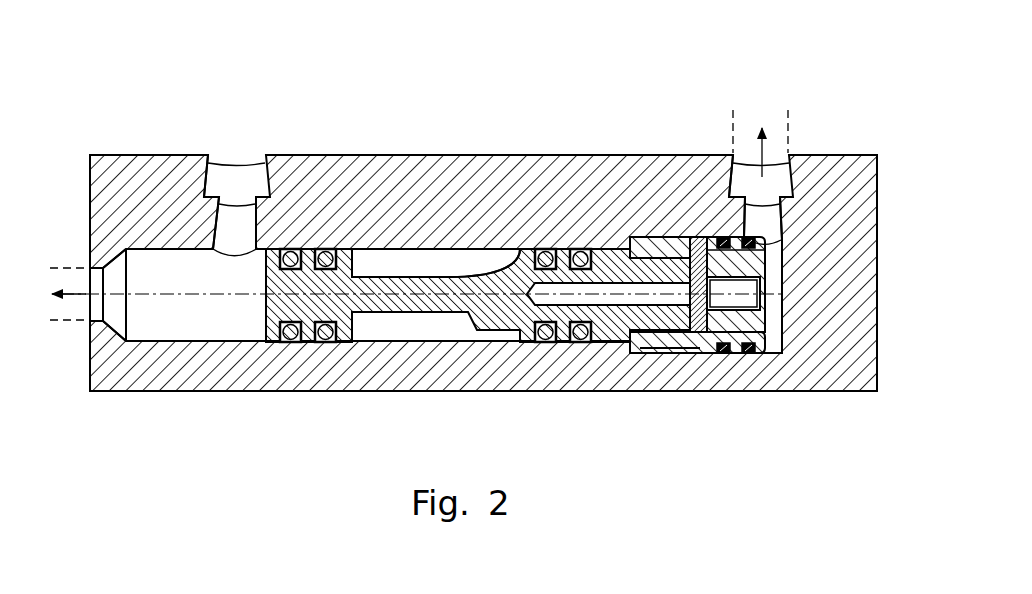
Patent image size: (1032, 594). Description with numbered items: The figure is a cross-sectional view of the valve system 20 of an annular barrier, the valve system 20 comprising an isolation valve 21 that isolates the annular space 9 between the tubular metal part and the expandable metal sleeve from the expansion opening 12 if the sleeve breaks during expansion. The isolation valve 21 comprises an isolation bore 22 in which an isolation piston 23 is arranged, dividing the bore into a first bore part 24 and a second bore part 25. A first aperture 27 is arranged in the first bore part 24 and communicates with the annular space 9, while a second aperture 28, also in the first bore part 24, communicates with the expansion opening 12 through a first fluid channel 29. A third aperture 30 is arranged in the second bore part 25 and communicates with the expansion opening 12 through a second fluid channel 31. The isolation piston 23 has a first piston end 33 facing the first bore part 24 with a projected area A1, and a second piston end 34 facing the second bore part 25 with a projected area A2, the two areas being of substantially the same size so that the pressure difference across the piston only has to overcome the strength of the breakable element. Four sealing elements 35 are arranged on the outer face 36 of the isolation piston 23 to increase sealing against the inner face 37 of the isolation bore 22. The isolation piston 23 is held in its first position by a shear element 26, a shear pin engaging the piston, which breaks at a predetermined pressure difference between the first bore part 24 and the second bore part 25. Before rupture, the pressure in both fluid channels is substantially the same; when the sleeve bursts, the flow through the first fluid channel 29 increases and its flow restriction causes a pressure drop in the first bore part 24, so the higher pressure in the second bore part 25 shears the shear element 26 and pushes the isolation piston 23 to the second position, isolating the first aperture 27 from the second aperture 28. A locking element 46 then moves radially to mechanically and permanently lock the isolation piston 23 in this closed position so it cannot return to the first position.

The valve system 20 is at (489, 203).
The isolation valve 21 is at (113, 86).
The annular space 9 is at (237, 177).
The expansion opening 12 is at (401, 206).
The first aperture 27 is at (256, 162).
The second aperture 28 is at (110, 272).
The first fluid channel 29 is at (67, 325).
The first bore part 24 is at (165, 332).
The isolation bore 22 is at (433, 264).
The isolation piston 23 is at (283, 342).
The first piston end 33 is at (258, 330).
The inner face of the isolation bore 37 is at (459, 254).
The outer face of the isolation piston 36 is at (331, 251).
The sealing elements 35 is at (328, 343).
The locking element 46 is at (664, 242).
The shear element 26 is at (698, 246).
The second bore part 25 is at (754, 343).
The second piston end 34 is at (641, 347).
The third aperture 30 is at (778, 172).
The second fluid channel 31 is at (790, 150).
The projected area of the first piston end A1 is at (624, 247).
The projected area of the second piston end A2 is at (770, 246).